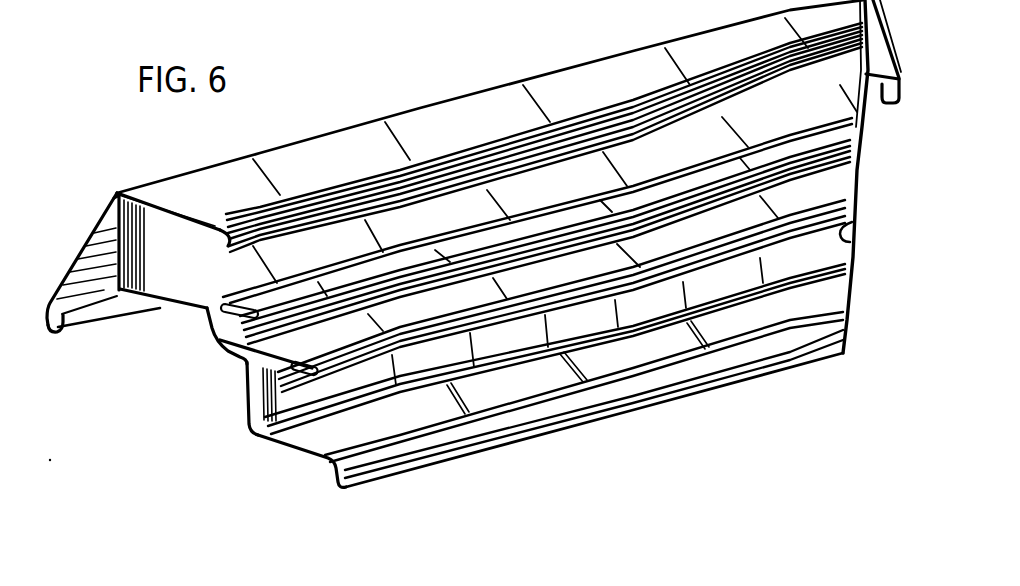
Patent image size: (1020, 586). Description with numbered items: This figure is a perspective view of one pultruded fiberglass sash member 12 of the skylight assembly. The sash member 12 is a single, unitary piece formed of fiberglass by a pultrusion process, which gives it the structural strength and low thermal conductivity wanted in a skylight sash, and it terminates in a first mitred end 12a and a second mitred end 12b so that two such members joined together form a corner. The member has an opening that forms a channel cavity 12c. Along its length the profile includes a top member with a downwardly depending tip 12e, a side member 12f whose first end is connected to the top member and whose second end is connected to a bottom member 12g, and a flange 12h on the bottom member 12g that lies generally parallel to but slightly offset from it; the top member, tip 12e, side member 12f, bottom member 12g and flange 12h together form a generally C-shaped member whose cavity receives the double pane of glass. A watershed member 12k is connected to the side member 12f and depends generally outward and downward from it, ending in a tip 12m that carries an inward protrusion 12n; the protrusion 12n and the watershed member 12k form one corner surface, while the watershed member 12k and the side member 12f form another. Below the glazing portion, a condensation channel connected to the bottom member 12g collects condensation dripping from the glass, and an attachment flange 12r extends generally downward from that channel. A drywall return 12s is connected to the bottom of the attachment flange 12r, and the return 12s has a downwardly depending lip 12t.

The pultruded fiberglass sash member 12 is at (357, 128).
The first mitred end 12a is at (210, 334).
The second mitred end 12b is at (852, 170).
The channel cavity 12c is at (86, 273).
The downwardly depending tip 12e is at (597, 127).
The side member 12f is at (153, 254).
The bottom member 12g is at (172, 313).
The flange 12h is at (604, 208).
The watershed member 12k is at (100, 233).
The tip 12m is at (45, 328).
The inward protrusion 12n is at (107, 309).
The attachment flange 12r is at (249, 407).
The drywall return 12s is at (280, 444).
The downwardly depending lip 12t is at (390, 458).